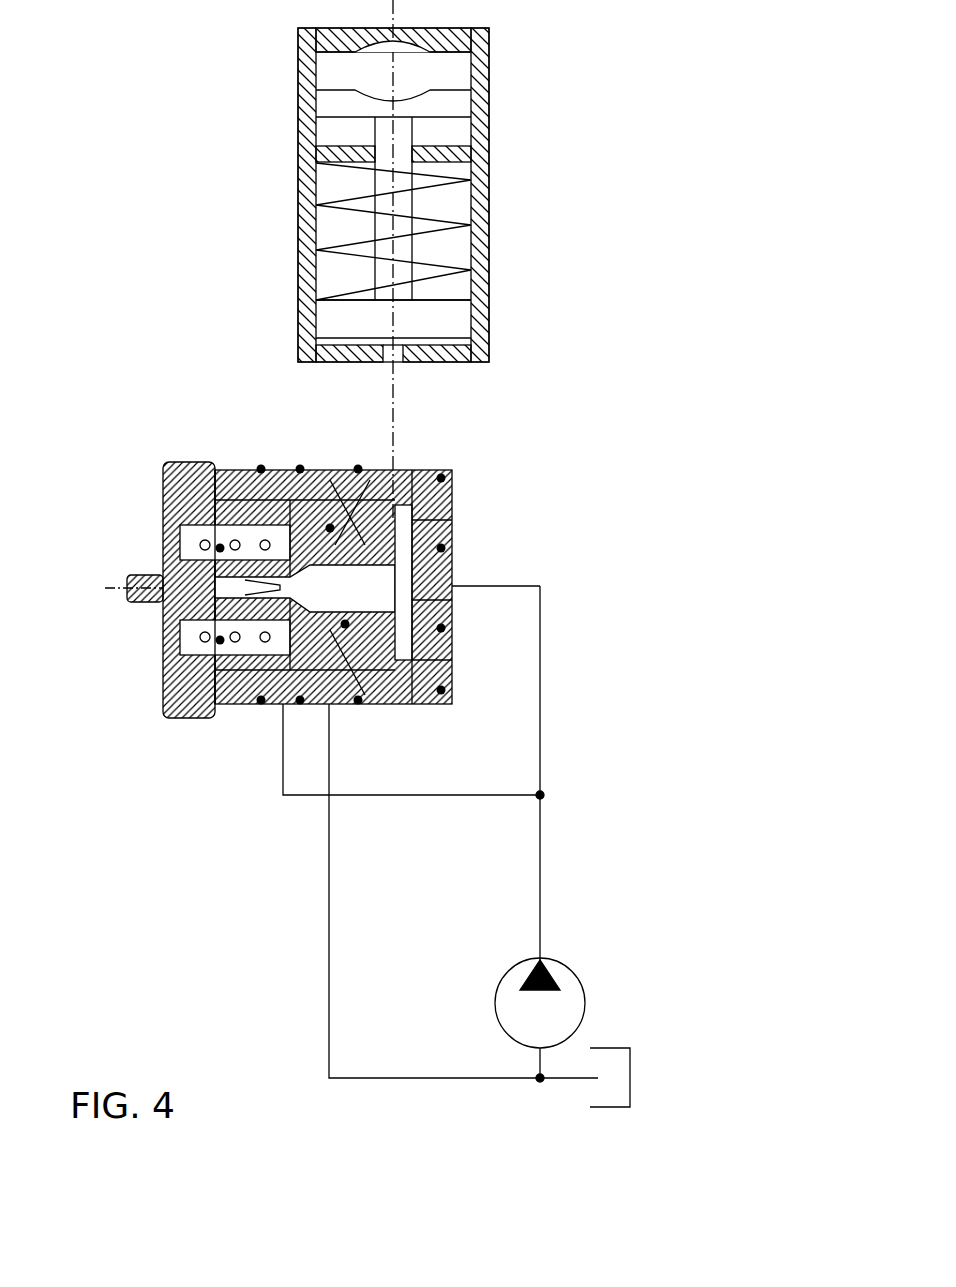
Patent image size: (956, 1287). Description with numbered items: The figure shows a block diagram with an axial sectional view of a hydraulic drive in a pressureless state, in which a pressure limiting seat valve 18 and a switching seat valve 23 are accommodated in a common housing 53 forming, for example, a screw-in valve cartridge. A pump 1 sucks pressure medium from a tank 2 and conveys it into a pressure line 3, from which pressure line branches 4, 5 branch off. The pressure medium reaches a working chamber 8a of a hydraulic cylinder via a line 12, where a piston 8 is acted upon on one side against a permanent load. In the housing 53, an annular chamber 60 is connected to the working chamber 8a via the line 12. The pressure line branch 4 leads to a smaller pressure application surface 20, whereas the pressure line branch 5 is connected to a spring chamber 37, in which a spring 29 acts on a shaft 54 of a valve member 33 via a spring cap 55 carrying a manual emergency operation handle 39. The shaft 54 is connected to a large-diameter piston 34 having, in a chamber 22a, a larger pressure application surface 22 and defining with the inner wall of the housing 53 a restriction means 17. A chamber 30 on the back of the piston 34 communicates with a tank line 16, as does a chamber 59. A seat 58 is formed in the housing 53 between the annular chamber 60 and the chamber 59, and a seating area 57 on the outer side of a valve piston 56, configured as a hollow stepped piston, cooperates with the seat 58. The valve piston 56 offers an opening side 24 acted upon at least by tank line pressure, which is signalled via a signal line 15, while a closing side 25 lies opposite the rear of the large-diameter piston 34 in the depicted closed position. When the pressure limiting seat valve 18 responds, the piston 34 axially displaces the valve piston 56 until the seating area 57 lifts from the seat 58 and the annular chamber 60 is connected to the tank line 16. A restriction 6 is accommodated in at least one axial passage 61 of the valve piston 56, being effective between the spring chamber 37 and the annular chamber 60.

The pump 1 is at (578, 978).
The tank 2 is at (616, 1052).
The pressure line 3 is at (540, 666).
The pressure line branch 4 is at (527, 586).
The pressure line branch 5 is at (497, 798).
The restriction 6 is at (330, 706).
The piston 8 is at (416, 214).
The working chamber 8a is at (455, 348).
The line 12 is at (393, 410).
The signal line 15 is at (380, 706).
The tank line 16 is at (330, 838).
The restriction means 17 is at (412, 470).
The pressure limiting seat valve 18 is at (320, 598).
The smaller pressure application surface 20 is at (452, 573).
The larger pressure application surface 22 is at (452, 505).
The chamber 22a is at (425, 706).
The switching seat valve 23 is at (265, 730).
The opening side 24 is at (430, 632).
The closing side 25 is at (240, 470).
The spring 29 is at (190, 465).
The chamber 30 is at (425, 520).
The valve member 33 is at (165, 575).
The large-diameter piston 34 is at (400, 706).
The spring chamber 37 is at (185, 668).
The manual emergency operation handle 39 is at (150, 601).
The housing 53 is at (210, 470).
The shaft 54 is at (318, 470).
The spring cap 55 is at (220, 715).
The valve piston 56 is at (285, 470).
The seating area 57 is at (368, 470).
The seat 58 is at (345, 706).
The chamber 59 is at (345, 468).
The annular chamber 60 is at (362, 640).
The axial passage 61 is at (338, 640).